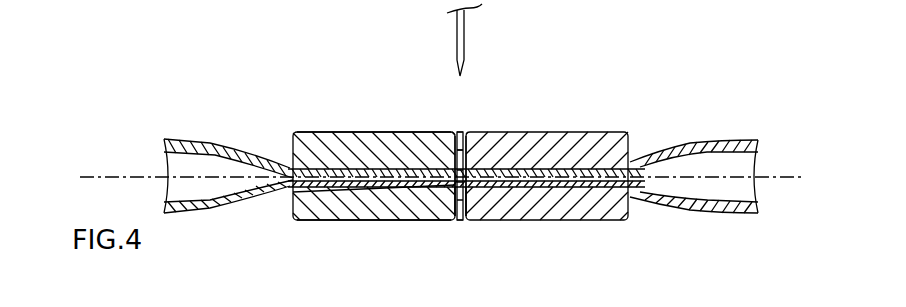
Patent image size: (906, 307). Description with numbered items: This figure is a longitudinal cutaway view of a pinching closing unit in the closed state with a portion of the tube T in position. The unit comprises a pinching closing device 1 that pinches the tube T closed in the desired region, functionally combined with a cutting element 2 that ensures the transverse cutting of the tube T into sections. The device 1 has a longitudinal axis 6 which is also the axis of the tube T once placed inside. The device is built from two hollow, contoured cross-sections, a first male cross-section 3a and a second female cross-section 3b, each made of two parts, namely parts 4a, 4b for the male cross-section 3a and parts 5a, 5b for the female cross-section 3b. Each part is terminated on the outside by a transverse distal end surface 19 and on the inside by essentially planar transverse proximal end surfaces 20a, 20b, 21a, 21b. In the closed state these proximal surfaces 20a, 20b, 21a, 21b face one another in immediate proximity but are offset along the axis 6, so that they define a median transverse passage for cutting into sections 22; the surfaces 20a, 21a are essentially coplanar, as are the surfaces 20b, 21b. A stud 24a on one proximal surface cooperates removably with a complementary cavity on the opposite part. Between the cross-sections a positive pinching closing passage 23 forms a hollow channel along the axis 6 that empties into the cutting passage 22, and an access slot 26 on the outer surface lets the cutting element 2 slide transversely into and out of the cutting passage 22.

The tube T is at (185, 132).
The longitudinal axis 6 is at (103, 175).
The transverse distal end surface 19 is at (290, 148).
The positive pinching closing passage 23 is at (343, 188).
The first male cross-section 3a is at (367, 206).
The second female cross-section 3b is at (331, 125).
The part of the female cross-section 5a is at (393, 132).
The part of the male cross-section 4a is at (398, 220).
The transverse proximal end surface 21a is at (443, 132).
The transverse proximal end surface 20a is at (455, 193).
The part of the female cross-section 5b is at (585, 132).
The part of the male cross-section 4b is at (593, 220).
The transverse proximal end surface 21b is at (491, 132).
The transverse proximal end surface 20b is at (467, 192).
The median transverse passage for cutting into sections 22 is at (462, 132).
The access slot 26 is at (468, 156).
The stud 24a is at (460, 220).
The pinching closing device for cutting into sections 1 is at (452, 122).
The cutting element 2 is at (476, 31).